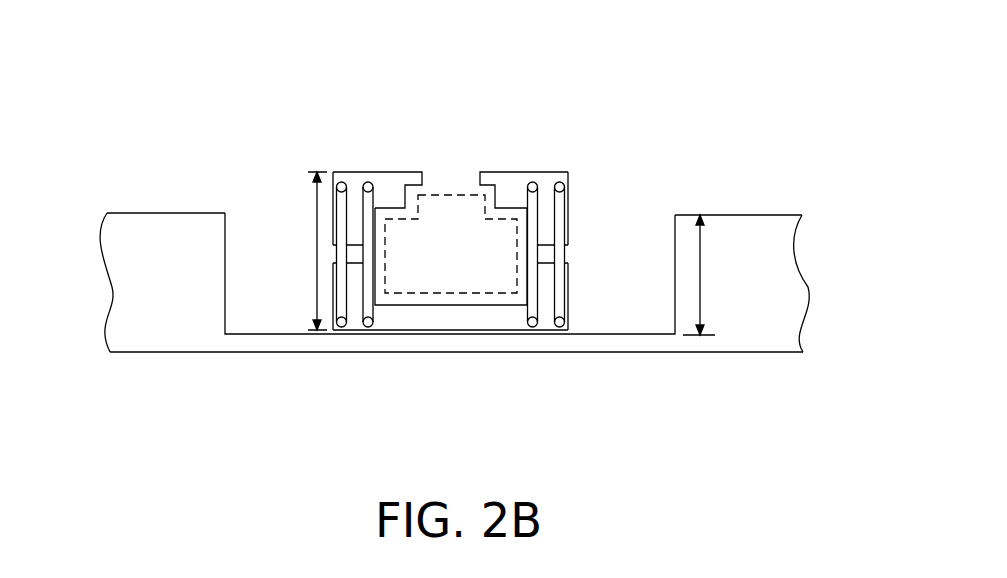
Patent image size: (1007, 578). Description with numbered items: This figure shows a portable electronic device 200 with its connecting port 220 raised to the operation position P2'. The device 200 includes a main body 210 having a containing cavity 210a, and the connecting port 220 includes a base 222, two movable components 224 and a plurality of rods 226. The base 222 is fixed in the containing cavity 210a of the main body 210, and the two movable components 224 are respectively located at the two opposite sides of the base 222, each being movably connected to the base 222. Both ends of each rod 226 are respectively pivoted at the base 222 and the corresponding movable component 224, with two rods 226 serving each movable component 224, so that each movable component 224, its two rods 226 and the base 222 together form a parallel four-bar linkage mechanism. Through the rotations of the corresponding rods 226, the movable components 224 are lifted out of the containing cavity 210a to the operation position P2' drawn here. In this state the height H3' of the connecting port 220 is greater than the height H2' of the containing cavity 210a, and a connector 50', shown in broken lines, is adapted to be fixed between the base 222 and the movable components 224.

The portable electronic device 200 is at (813, 442).
The main body 210 is at (730, 237).
The containing cavity 210a is at (228, 272).
The connecting port 220 is at (459, 167).
The base 222 is at (460, 318).
The movable component 224 is at (387, 183).
The rod 226 is at (370, 295).
The connector 50' is at (451, 176).
The operation position P2' is at (635, 168).
The height of the containing cavity H2' is at (727, 275).
The height of the connecting port H3' is at (298, 290).